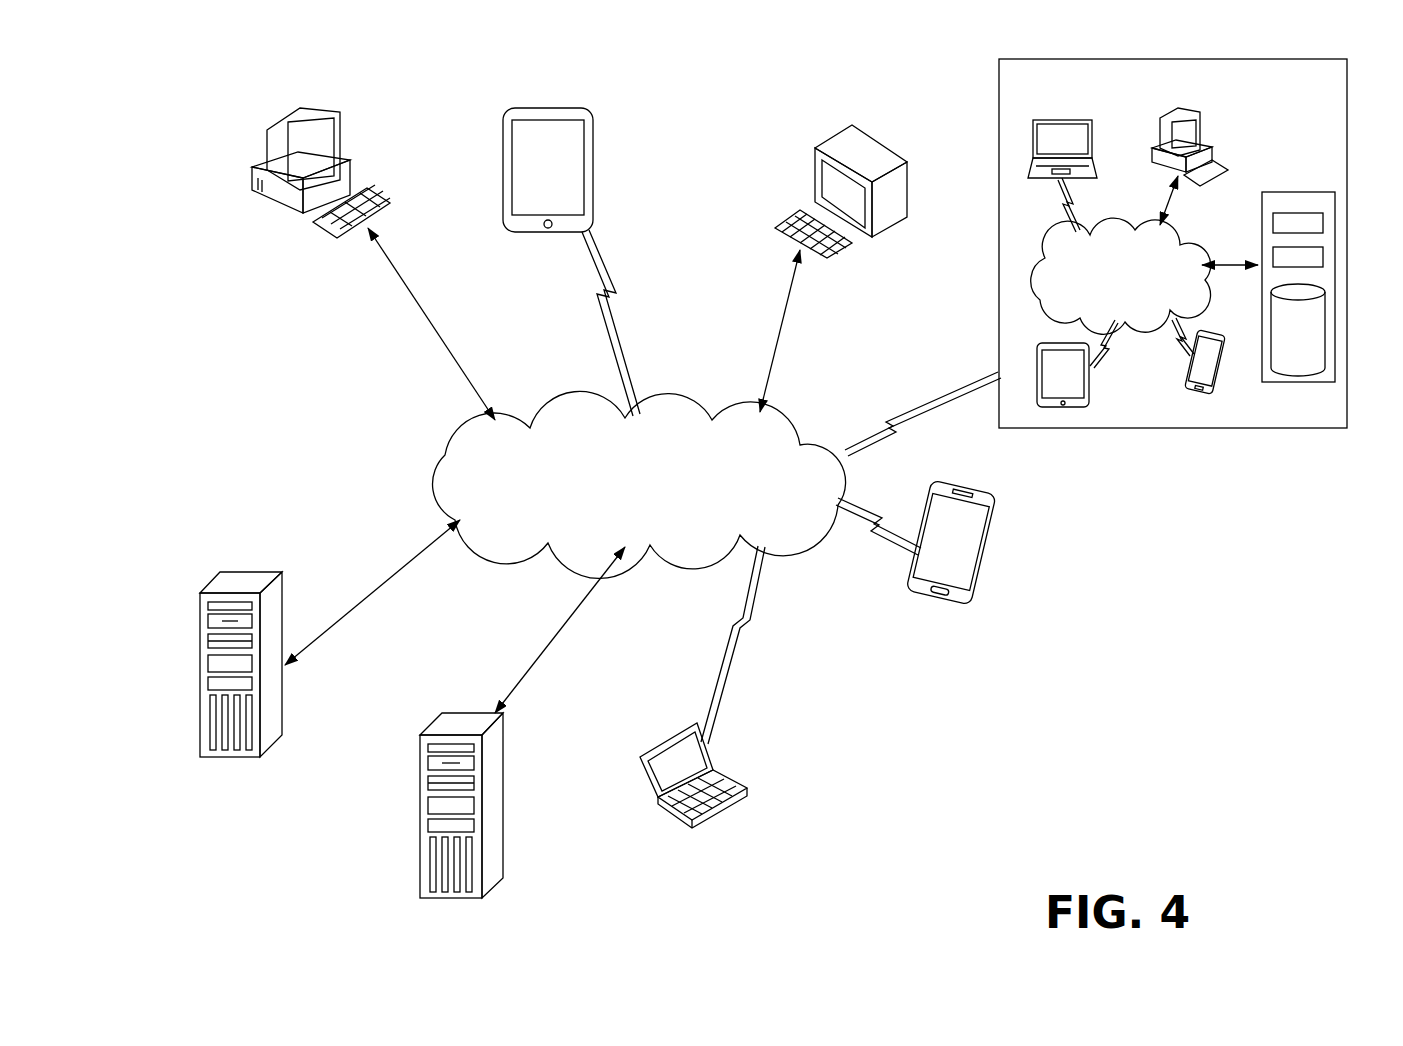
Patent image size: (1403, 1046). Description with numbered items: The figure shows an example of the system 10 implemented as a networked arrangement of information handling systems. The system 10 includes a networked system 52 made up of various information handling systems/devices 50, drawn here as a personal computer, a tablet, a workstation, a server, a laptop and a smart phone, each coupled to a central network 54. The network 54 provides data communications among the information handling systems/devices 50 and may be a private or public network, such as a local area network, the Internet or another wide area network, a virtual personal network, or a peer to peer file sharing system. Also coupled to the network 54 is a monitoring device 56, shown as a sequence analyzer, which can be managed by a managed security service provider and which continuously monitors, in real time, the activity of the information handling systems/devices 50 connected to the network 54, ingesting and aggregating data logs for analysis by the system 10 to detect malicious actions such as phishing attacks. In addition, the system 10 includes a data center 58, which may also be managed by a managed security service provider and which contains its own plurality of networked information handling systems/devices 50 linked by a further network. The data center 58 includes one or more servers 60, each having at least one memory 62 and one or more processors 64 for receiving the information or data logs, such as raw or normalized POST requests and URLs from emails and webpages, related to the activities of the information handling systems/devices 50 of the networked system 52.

The system 10 is at (165, 168).
The information handling systems/devices 50 is at (345, 105).
The networked system 52 is at (222, 398).
The network 54 is at (680, 420).
The monitoring device 56 is at (505, 745).
The data center 58 is at (1330, 259).
The server 60 is at (1300, 390).
The memory 62 is at (1322, 338).
The processor 64 is at (1323, 225).